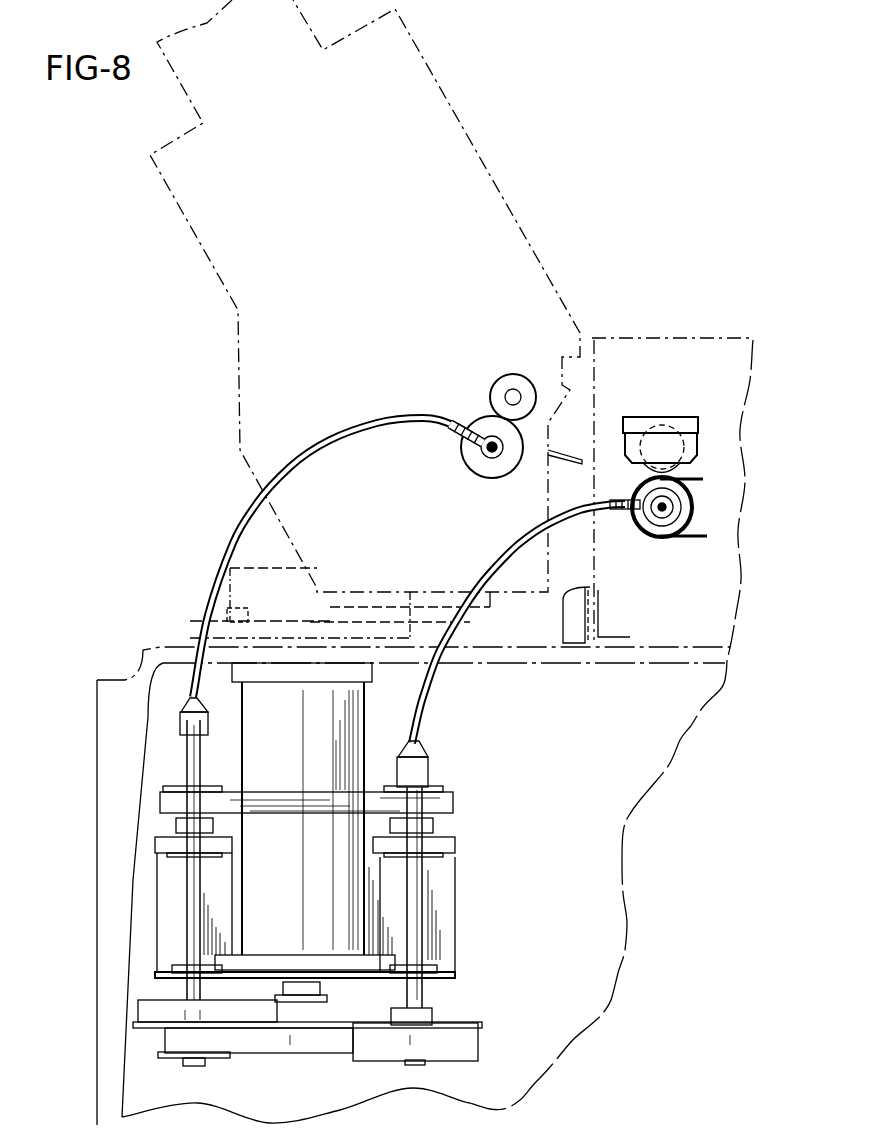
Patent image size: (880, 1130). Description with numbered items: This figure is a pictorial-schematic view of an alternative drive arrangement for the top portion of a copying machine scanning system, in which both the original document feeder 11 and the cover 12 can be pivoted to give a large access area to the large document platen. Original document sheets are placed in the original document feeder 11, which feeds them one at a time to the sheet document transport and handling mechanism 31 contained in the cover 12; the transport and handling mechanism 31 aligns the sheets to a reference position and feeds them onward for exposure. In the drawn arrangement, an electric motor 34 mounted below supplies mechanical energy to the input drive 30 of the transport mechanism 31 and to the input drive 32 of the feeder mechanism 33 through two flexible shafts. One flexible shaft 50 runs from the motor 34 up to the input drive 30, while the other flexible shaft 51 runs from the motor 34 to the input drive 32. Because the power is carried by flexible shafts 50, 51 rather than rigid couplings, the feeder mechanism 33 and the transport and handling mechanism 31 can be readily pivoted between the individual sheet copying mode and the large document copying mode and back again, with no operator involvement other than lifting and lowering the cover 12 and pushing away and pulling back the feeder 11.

The original document feeder 11 is at (473, 150).
The cover 12 is at (652, 340).
The input drive 30 is at (652, 528).
The transport and handling mechanism 31 is at (633, 527).
The input drive 32 is at (479, 423).
The feeder mechanism 33 is at (476, 459).
The electric motor 34 is at (307, 864).
The flexible shaft 50 is at (427, 700).
The flexible shaft 51 is at (230, 541).